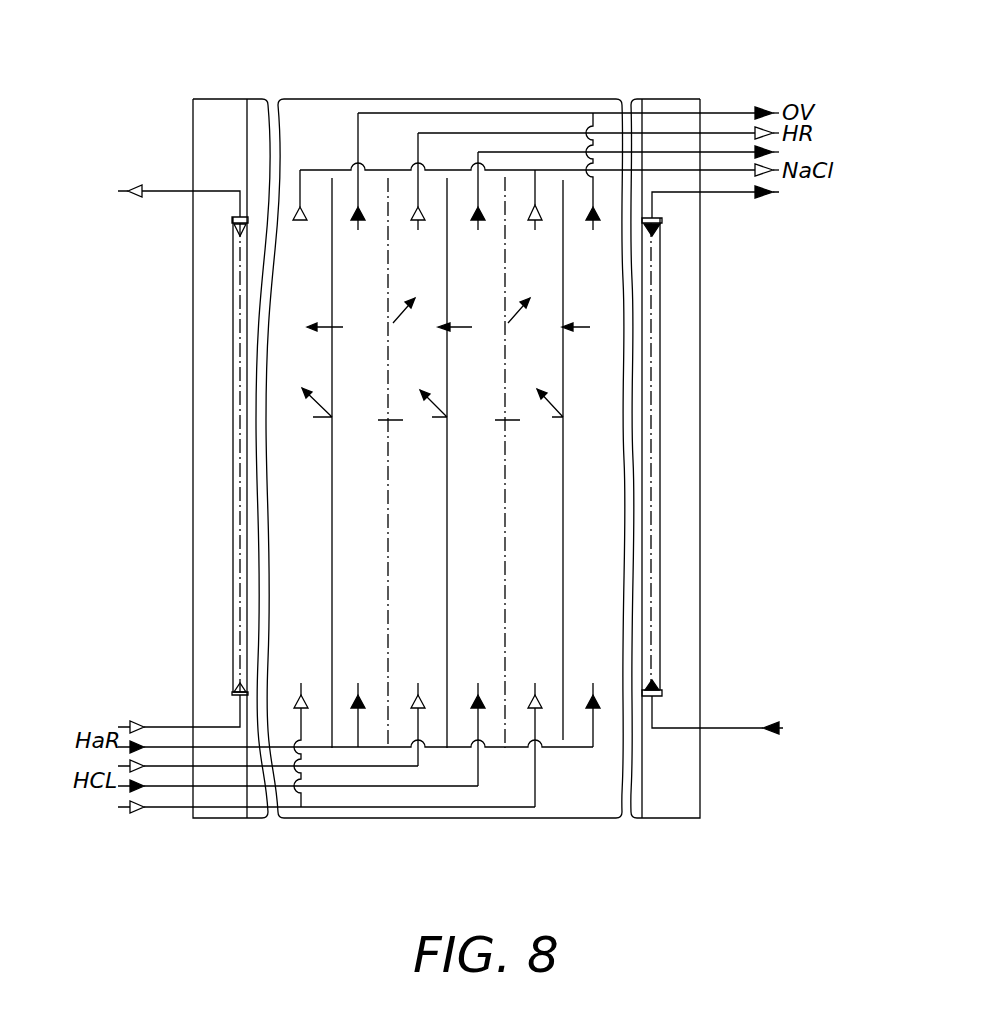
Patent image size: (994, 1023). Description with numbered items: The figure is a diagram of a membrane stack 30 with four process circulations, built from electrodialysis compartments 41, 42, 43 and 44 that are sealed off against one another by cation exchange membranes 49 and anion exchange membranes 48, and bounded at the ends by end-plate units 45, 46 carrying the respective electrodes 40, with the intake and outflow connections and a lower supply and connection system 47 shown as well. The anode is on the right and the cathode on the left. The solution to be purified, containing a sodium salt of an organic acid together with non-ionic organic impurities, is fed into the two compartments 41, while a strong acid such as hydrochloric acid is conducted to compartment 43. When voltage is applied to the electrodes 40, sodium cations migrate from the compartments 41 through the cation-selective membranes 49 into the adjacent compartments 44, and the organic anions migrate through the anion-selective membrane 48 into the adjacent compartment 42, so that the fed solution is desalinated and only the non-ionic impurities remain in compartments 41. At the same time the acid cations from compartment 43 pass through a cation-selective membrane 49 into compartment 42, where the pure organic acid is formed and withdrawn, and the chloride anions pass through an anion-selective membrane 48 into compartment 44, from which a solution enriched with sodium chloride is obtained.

The electrodialysis cell membrane stack 30 is at (563, 180).
The electrodes 40 is at (450, 459).
The electrodialysis compartment 41 is at (485, 430).
The electrodialysis compartment 42 is at (427, 578).
The electrodialysis compartment 43 is at (486, 578).
The electrodialysis compartment 44 is at (431, 488).
The cathode tank 45 is at (222, 127).
The anode tank 46 is at (653, 185).
The bottom manifold housing 47 is at (565, 788).
The anion exchange membrane 48 is at (503, 855).
The cation exchange membrane 49 is at (538, 857).